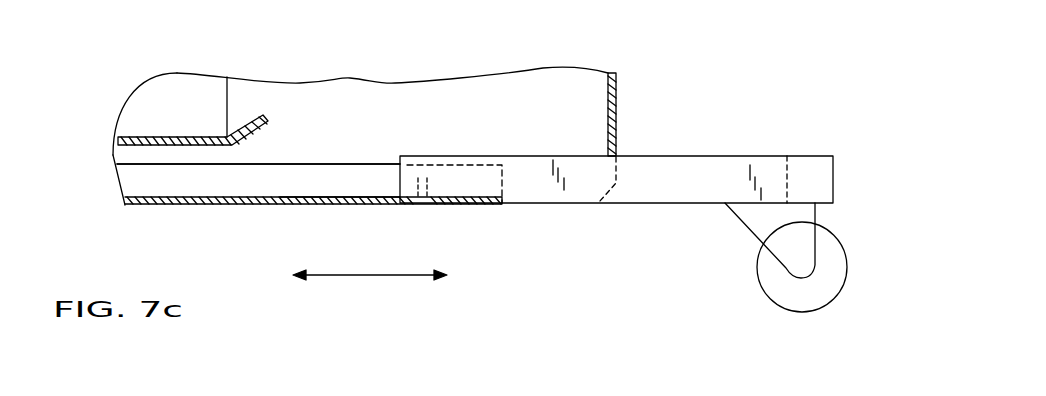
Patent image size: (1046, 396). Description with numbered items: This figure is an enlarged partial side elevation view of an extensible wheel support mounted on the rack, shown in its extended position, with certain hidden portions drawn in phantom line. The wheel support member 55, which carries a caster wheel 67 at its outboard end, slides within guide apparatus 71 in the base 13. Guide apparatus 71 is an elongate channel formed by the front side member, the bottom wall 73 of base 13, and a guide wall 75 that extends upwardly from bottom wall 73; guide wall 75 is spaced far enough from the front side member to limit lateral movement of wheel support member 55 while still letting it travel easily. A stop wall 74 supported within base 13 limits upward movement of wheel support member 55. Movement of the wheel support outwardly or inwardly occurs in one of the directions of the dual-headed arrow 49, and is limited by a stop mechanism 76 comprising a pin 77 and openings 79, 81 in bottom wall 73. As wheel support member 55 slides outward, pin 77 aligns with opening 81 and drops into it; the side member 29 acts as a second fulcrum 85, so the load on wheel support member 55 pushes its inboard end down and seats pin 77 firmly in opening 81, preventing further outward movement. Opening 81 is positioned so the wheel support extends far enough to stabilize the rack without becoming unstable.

The base 13 is at (150, 217).
The right side member 29 is at (617, 90).
The dual-headed arrow 49 is at (372, 277).
The wheel support member 55 is at (683, 183).
The wheel 67 is at (833, 282).
The guide apparatus 71 is at (315, 130).
The bottom wall 73 is at (302, 207).
The stop wall 74 is at (168, 149).
The guide wall 75 is at (304, 178).
The stop mechanism 76 is at (443, 243).
The pin 77 is at (426, 185).
The opening 79 is at (202, 207).
The opening 81 is at (423, 205).
The second fulcrum 85 is at (617, 153).